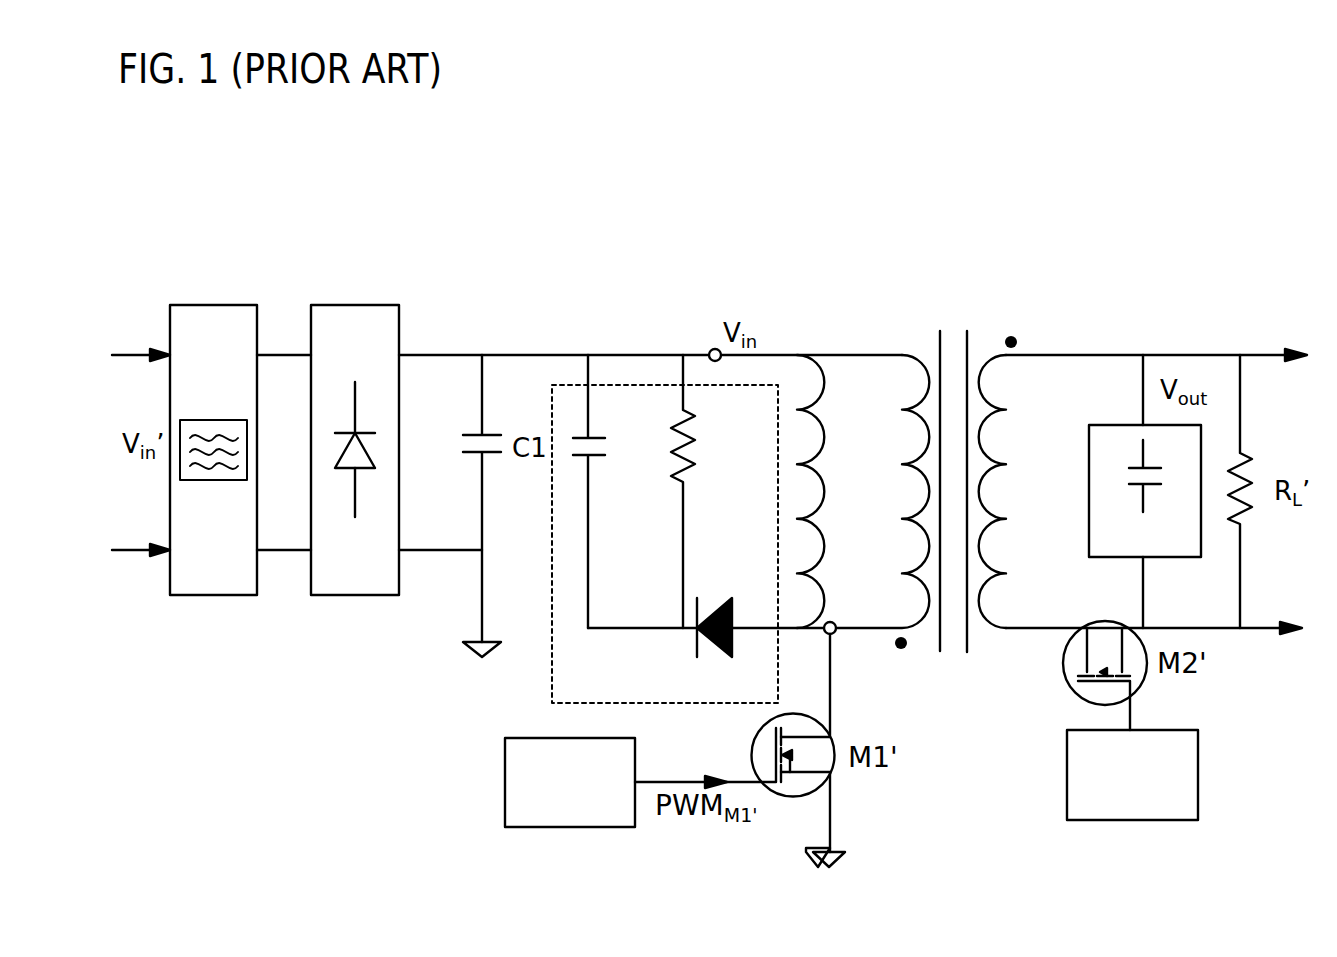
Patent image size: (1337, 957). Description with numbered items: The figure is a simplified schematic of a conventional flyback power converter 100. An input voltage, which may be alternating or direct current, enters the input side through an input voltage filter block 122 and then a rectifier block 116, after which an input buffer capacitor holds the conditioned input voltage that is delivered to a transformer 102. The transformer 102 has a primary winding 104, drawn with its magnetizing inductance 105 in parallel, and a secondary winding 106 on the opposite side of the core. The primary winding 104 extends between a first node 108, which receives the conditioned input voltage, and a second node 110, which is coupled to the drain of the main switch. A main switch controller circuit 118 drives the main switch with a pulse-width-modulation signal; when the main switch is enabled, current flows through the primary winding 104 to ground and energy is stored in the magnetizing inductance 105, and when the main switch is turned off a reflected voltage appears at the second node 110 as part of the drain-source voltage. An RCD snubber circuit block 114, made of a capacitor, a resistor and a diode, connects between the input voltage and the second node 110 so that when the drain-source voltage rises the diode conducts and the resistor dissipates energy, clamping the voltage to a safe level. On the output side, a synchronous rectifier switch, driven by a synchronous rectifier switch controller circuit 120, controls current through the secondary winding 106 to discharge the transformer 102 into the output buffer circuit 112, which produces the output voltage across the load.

The power converter 100 is at (165, 165).
The transformer 102 is at (940, 651).
The primary winding 104 is at (945, 312).
The magnetizing inductance 105 is at (823, 510).
The secondary winding 106 is at (1045, 312).
The first node 108 is at (712, 350).
The second node 110 is at (834, 635).
The output buffer circuit 112 is at (1191, 548).
The RCD snubber circuit block 114 is at (626, 687).
The rectifier block 116 is at (388, 586).
The main switch controller circuit 118 is at (628, 819).
The synchronous rectifier switch controller circuit 120 is at (1190, 809).
The input voltage filter block 122 is at (248, 586).